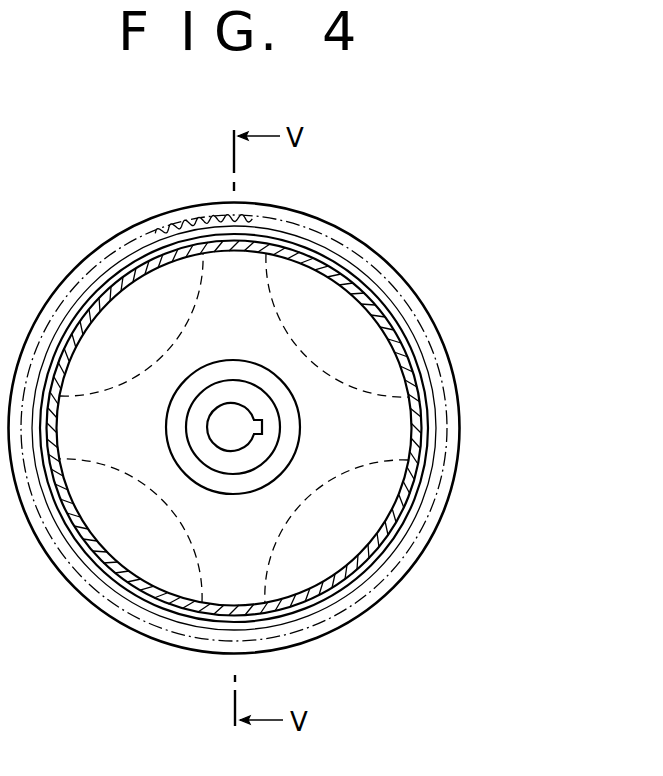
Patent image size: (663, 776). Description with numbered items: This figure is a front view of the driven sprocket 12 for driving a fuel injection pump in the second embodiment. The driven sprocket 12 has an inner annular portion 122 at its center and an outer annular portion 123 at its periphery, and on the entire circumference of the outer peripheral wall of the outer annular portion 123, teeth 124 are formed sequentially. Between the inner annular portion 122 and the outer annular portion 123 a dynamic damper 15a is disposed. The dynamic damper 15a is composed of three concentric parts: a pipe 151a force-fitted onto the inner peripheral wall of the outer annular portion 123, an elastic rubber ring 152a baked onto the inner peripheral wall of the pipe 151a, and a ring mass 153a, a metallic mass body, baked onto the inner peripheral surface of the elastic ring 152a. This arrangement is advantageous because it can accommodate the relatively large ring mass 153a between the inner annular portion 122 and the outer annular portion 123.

The driven sprocket 12 is at (430, 271).
The inner annular portion 122 is at (261, 407).
The outer annular portion 123 is at (417, 343).
The teeth 124 is at (182, 215).
The dynamic damper 15a is at (343, 271).
The pipe 151a is at (418, 383).
The elastic rubber ring 152a is at (417, 435).
The ring mass 153a is at (347, 512).